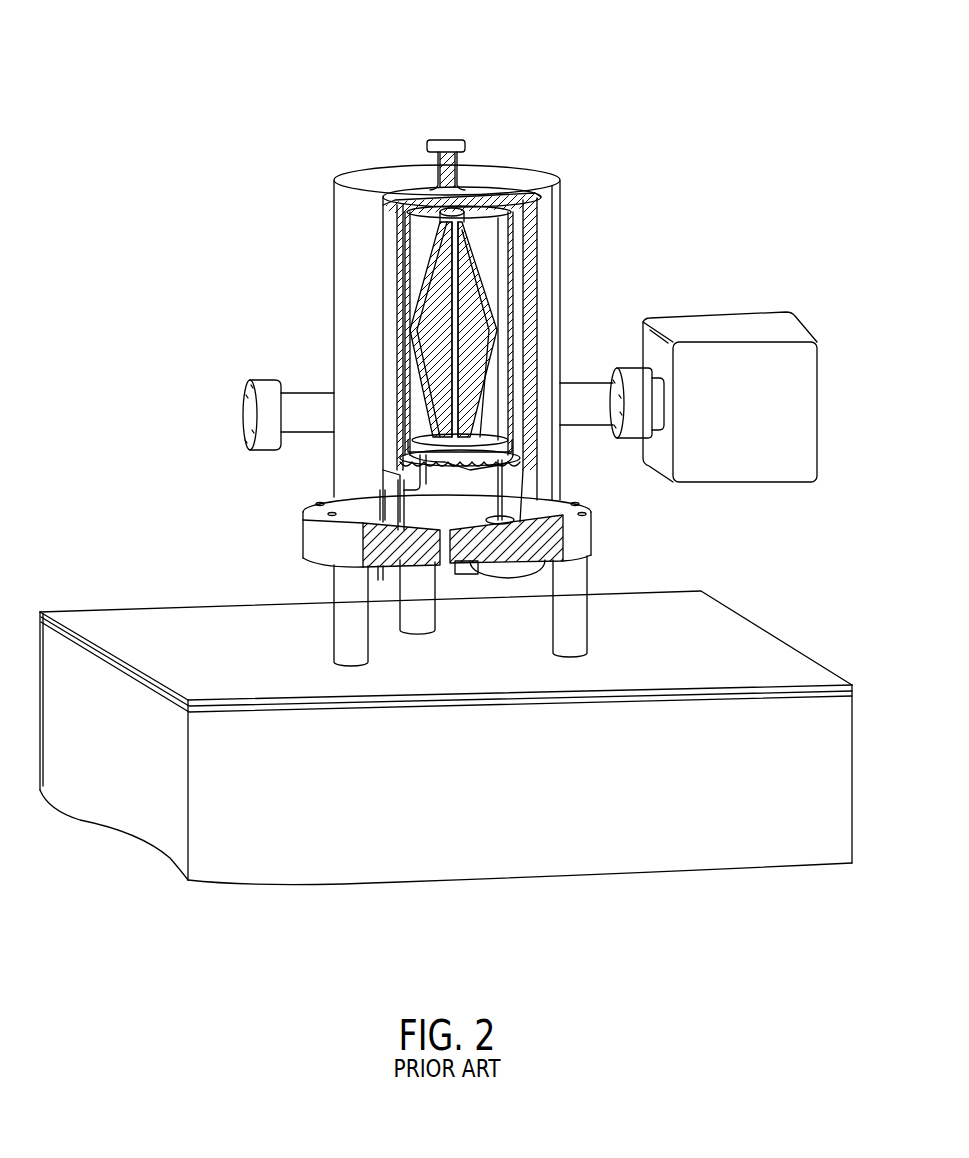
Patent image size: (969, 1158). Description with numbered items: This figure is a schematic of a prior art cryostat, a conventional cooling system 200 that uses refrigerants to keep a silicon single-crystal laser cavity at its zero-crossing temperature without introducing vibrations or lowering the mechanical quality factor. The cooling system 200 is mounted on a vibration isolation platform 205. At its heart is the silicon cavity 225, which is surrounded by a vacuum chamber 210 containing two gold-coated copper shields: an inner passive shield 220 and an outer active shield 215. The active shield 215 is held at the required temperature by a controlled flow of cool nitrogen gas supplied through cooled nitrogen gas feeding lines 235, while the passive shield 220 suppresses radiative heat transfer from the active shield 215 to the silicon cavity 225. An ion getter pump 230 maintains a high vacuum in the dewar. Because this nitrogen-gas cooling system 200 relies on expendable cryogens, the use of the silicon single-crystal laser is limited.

The cooling system 200 is at (200, 82).
The vibration isolation platform 205 is at (598, 858).
The vacuum chamber 210 is at (544, 184).
The active shield 215 is at (395, 208).
The passive shield 220 is at (403, 407).
The silicon cavity 225 is at (448, 307).
The ion getter pump 230 is at (745, 473).
The cooled nitrogen gas feeding lines 235 is at (480, 498).